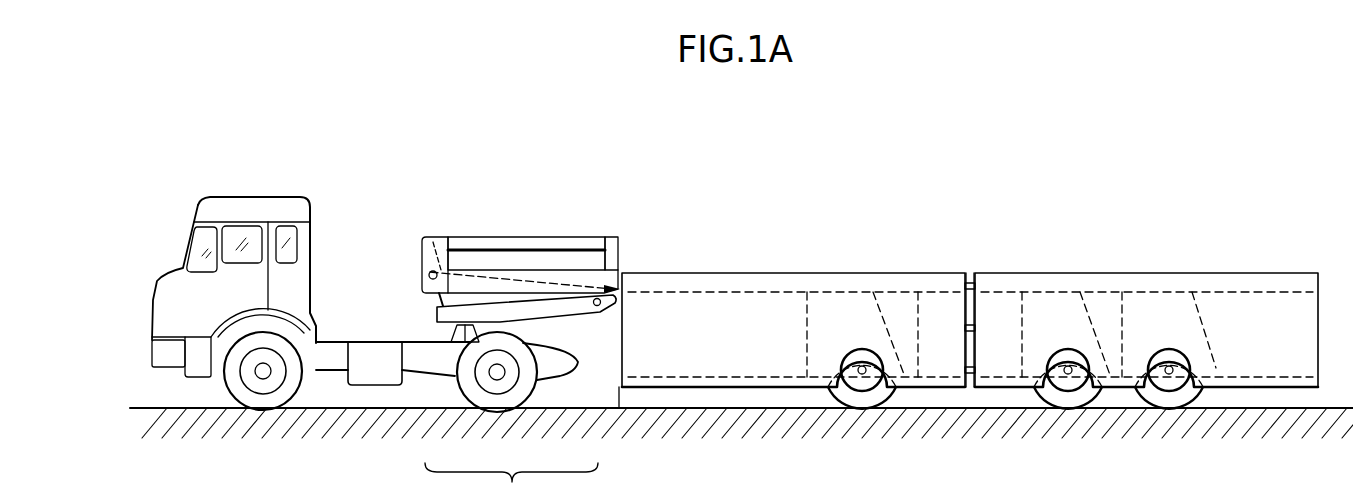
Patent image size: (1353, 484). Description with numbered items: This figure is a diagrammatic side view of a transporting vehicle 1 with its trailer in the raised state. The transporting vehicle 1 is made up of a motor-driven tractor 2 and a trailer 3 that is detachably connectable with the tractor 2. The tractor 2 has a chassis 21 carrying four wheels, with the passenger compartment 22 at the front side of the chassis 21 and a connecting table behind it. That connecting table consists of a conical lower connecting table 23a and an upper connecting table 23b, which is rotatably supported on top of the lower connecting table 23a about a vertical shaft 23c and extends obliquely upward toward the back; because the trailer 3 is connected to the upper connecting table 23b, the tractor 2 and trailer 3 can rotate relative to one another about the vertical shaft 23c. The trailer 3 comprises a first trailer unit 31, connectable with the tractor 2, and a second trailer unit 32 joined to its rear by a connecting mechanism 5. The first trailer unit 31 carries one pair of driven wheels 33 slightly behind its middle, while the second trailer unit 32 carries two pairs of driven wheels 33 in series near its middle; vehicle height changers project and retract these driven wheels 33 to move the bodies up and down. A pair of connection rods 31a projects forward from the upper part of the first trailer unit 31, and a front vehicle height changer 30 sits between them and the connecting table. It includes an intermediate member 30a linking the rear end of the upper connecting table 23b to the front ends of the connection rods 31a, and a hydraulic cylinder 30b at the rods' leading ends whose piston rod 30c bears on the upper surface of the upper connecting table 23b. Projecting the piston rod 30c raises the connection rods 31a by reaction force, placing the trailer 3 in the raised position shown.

The transporting vehicle 1 is at (415, 129).
The tractor 2 is at (362, 300).
The trailer 3 is at (842, 190).
The connecting mechanism 5 is at (966, 394).
The chassis 21 is at (415, 362).
The driver cab 22 is at (198, 298).
The lower connecting table 23a is at (447, 343).
The upper connecting table 23b is at (545, 313).
The vertical shaft 23c is at (450, 337).
The front vehicle height changer 30 is at (484, 238).
The platform body 30a is at (502, 268).
The hydraulic cylinder 30b is at (409, 246).
The piston rod 30c is at (440, 306).
The first trailer unit 31 is at (691, 267).
The connection rods 31a is at (545, 275).
The second trailer unit 32 is at (986, 265).
The driven wheels 33 is at (857, 400).